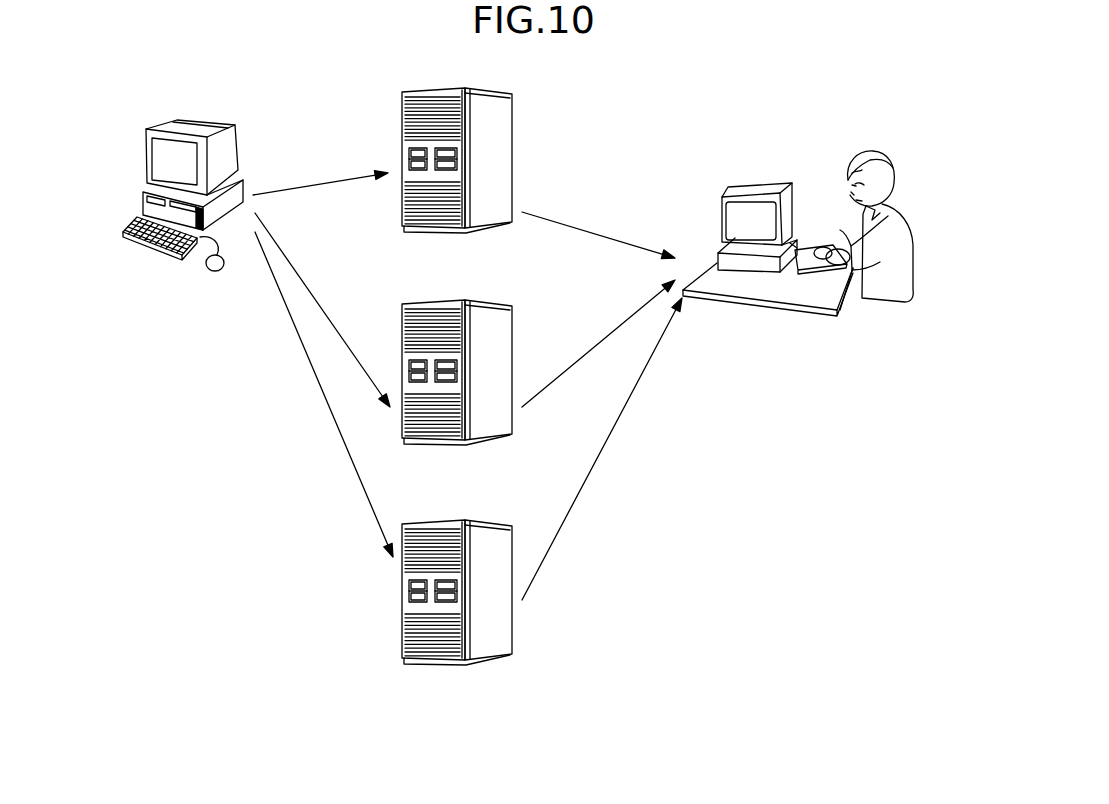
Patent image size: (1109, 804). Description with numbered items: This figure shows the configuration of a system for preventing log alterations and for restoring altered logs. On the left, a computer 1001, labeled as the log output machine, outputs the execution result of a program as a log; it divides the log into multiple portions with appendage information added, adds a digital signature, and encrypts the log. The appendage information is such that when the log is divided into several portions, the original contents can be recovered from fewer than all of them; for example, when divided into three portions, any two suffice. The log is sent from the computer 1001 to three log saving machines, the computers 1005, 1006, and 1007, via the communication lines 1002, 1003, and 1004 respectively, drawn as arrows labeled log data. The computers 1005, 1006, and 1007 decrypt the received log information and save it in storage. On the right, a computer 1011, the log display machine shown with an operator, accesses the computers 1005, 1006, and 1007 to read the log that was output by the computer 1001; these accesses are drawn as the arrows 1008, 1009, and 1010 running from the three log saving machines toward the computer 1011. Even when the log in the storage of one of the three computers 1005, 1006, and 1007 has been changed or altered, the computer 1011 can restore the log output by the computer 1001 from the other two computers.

The computer 1001 is at (215, 119).
The communication line 1002 is at (290, 189).
The communication line 1003 is at (320, 305).
The communication line 1004 is at (318, 380).
The computer 1005 is at (470, 90).
The computer 1006 is at (470, 302).
The computer 1007 is at (400, 590).
The log data transmission from first log saving machine 1008 is at (603, 178).
The log data transmission from second log saving machine 1009 is at (585, 355).
The log data transmission from third log saving machine 1010 is at (567, 513).
The computer 1011 is at (760, 188).